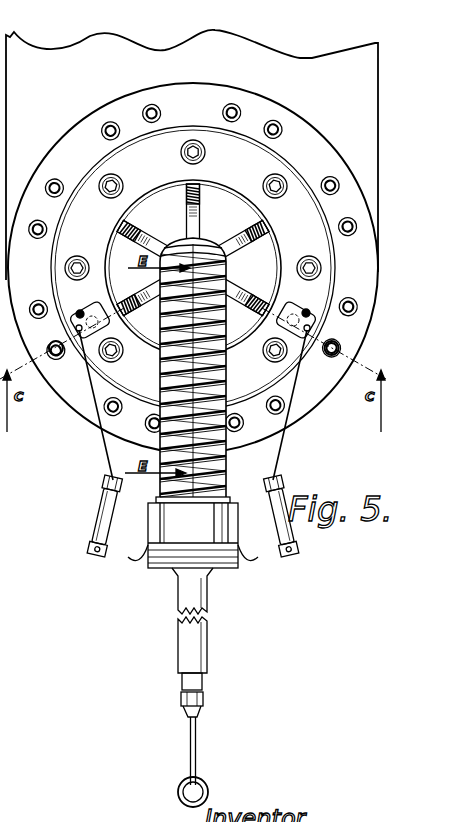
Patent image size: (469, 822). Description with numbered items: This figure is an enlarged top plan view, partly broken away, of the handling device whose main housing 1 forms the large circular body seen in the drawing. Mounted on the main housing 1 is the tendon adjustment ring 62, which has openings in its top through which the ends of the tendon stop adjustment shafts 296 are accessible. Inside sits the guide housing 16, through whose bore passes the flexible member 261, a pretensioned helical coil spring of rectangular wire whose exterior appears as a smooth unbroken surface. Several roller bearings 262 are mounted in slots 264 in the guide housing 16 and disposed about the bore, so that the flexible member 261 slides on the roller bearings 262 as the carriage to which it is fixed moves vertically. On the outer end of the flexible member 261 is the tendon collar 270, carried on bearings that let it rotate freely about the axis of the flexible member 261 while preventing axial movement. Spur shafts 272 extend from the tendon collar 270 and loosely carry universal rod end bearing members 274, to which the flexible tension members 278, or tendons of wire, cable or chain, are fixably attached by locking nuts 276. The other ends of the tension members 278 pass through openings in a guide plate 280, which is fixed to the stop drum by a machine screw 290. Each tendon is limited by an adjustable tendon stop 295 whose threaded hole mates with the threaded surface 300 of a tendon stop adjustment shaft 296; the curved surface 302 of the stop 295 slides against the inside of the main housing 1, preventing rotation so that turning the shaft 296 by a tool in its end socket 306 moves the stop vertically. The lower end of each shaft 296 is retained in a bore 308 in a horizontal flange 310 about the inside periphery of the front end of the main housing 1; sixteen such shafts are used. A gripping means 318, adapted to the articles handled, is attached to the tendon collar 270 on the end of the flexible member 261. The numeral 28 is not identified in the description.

The main housing 1 is at (342, 58).
The tendon adjustment ring 62 is at (325, 143).
The guide housing 16 is at (157, 200).
The roller bearings 262 is at (158, 243).
The slots 264 is at (128, 226).
The guide plate 280 is at (92, 297).
The machine screw 290 is at (75, 316).
The end socket 306 is at (55, 352).
The flexible member 261 is at (214, 357).
The flexible tension members 278 is at (112, 456).
The locking nuts 276 is at (110, 485).
The universal rod end bearing members 274 is at (124, 511).
The spur shafts 272 is at (139, 534).
The tendon collar 270 is at (172, 532).
The gripping means 318 is at (196, 647).
The surface 302 is at (10, 331).
The adjustable tendon stop 295 is at (10, 346).
The tendon stop adjustment shaft 296 is at (11, 444).
The threaded surface 300 is at (11, 459).
The bore 308 is at (12, 475).
The horizontal flange 310 is at (12, 490).
The element 28 is at (10, 675).